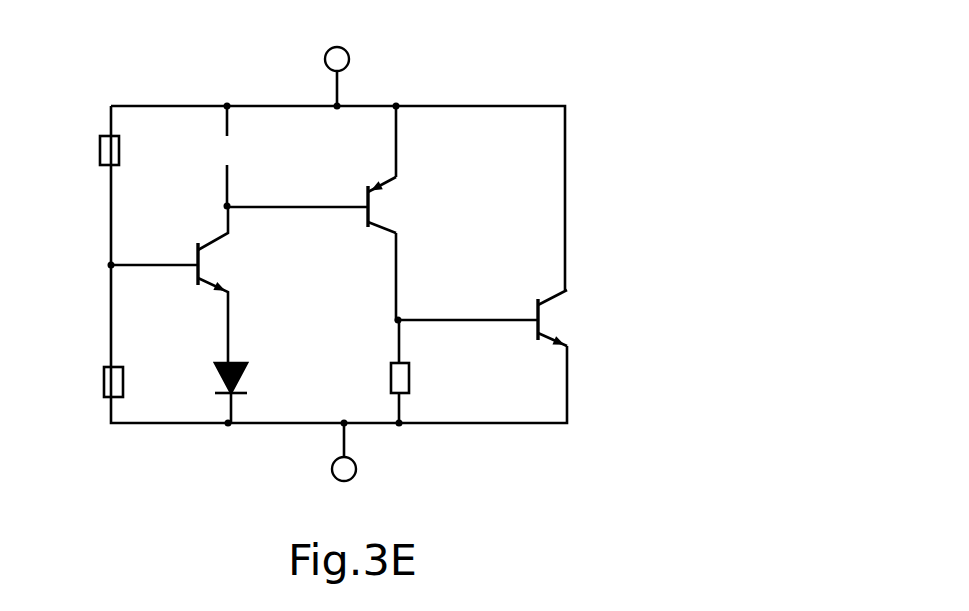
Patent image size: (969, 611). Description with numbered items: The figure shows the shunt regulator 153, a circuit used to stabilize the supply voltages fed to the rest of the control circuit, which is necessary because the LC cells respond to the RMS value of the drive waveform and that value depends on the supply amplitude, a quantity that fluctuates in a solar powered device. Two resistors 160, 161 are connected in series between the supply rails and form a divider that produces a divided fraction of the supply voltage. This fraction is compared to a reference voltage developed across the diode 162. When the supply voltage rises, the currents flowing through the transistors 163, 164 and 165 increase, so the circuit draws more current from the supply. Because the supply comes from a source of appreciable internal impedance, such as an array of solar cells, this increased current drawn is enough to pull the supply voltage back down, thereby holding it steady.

The shunt regulator 153 is at (571, 62).
The resistor 160 is at (100, 153).
The resistor 161 is at (104, 383).
The diode 162 is at (245, 378).
The transistor 163 is at (213, 262).
The transistor 164 is at (385, 207).
The transistor 165 is at (557, 320).